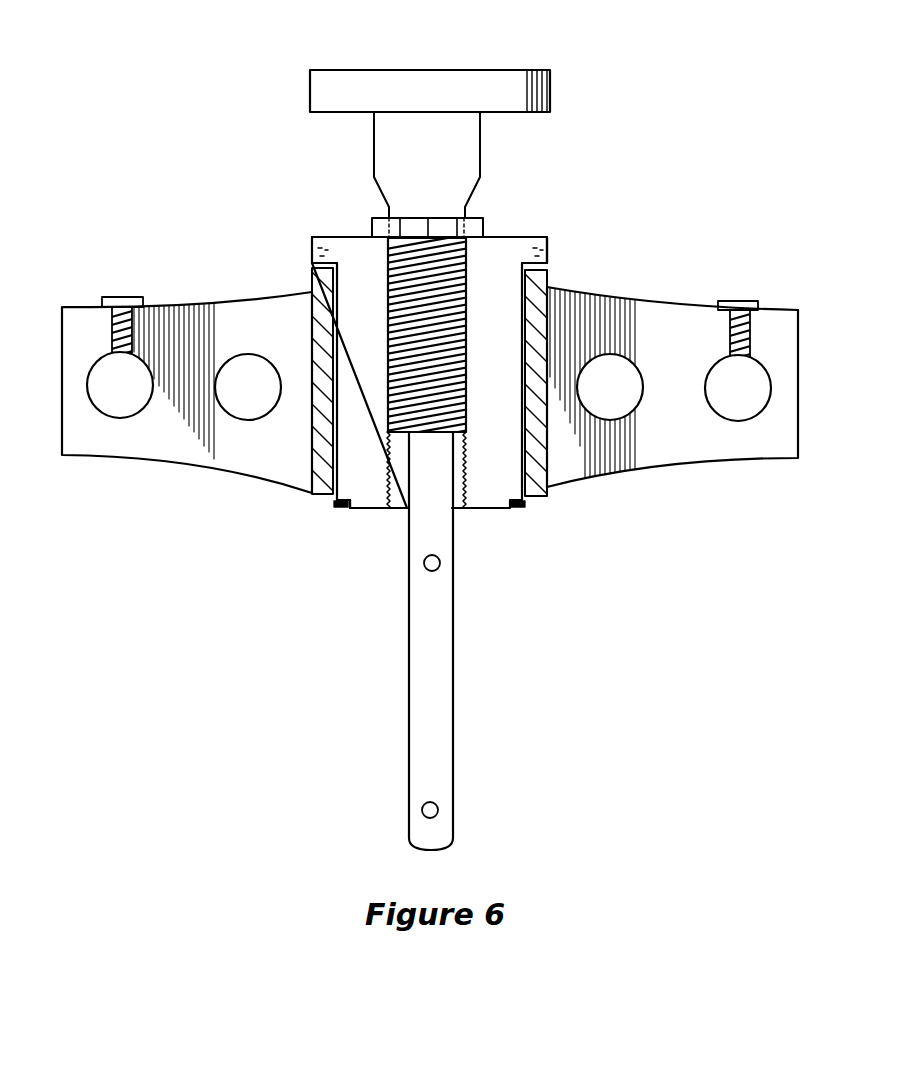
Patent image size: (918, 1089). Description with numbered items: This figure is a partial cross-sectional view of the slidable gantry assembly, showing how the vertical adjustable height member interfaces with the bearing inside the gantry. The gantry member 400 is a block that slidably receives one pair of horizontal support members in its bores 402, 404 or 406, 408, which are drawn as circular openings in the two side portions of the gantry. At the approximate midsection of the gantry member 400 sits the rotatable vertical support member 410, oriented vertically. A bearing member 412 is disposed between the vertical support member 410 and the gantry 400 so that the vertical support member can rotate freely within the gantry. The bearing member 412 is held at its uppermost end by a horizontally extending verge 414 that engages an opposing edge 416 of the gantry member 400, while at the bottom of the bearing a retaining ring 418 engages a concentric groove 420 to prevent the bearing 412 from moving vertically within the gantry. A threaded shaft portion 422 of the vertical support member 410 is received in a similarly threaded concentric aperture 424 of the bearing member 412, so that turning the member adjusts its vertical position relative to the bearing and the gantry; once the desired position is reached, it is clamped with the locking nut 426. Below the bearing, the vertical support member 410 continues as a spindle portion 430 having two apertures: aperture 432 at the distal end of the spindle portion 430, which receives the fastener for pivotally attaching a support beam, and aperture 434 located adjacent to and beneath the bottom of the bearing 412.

The gantry member 400 is at (776, 318).
The bore 402 is at (125, 418).
The bore 404 is at (740, 413).
The bore 406 is at (248, 410).
The bore 408 is at (617, 415).
The rotatable vertical support member 410 is at (463, 48).
The bearing member 412 is at (510, 248).
The horizontally extending verge 414 is at (312, 263).
The opposing edge 416 is at (312, 270).
The retaining ring 418 is at (330, 505).
The concentric groove 420 is at (348, 510).
The threaded shaft portion 422 is at (395, 241).
The threaded concentric aperture 424 is at (473, 482).
The locking nut 426 is at (476, 220).
The spindle portion 430 is at (440, 686).
The aperture 432 is at (439, 810).
The aperture 434 is at (441, 563).